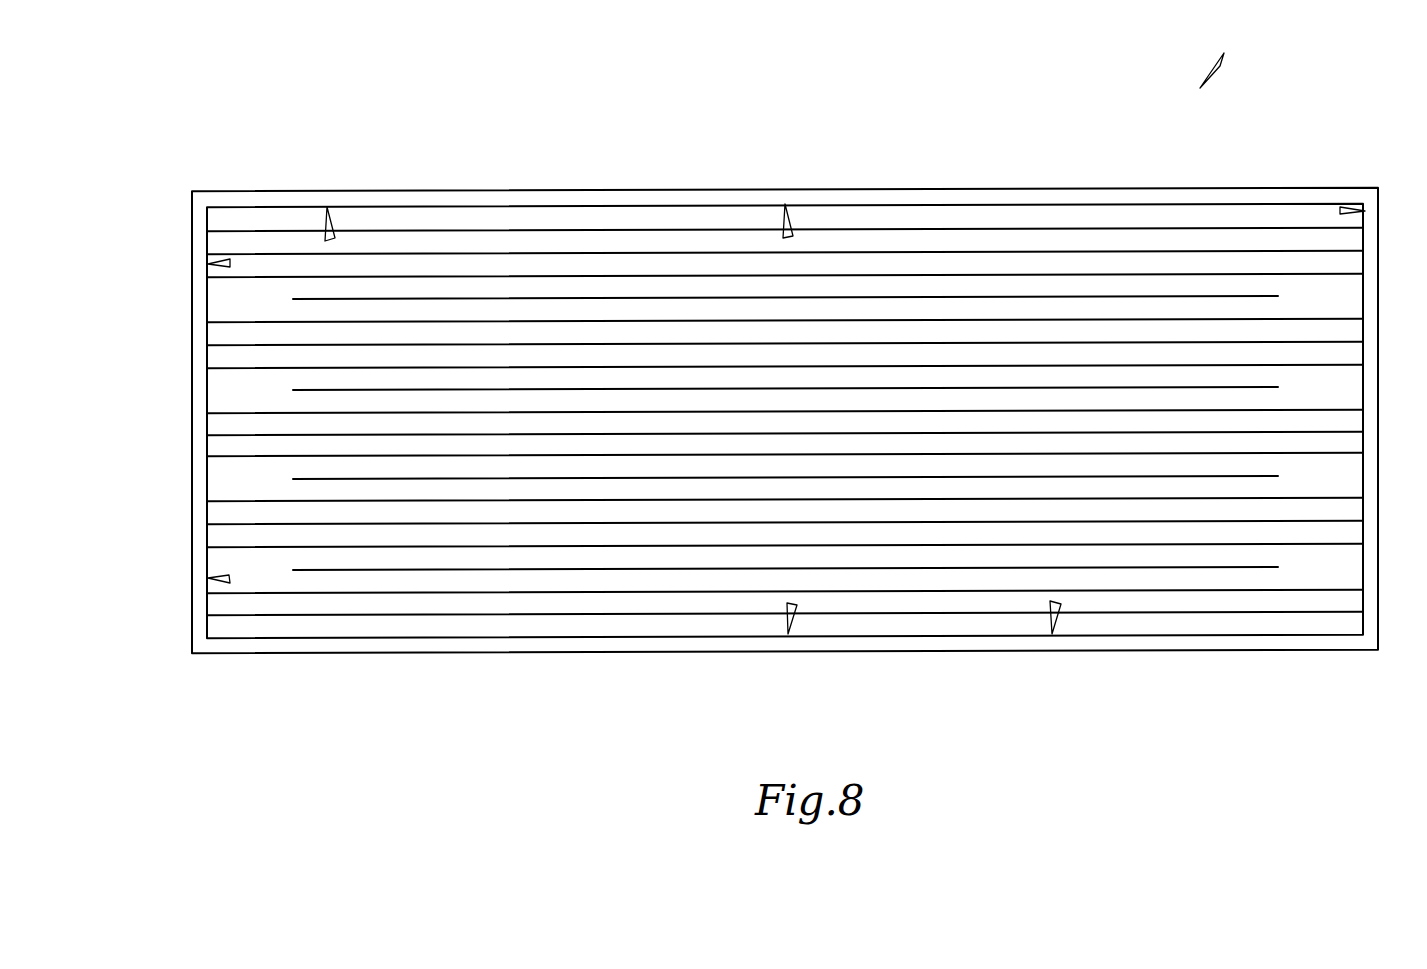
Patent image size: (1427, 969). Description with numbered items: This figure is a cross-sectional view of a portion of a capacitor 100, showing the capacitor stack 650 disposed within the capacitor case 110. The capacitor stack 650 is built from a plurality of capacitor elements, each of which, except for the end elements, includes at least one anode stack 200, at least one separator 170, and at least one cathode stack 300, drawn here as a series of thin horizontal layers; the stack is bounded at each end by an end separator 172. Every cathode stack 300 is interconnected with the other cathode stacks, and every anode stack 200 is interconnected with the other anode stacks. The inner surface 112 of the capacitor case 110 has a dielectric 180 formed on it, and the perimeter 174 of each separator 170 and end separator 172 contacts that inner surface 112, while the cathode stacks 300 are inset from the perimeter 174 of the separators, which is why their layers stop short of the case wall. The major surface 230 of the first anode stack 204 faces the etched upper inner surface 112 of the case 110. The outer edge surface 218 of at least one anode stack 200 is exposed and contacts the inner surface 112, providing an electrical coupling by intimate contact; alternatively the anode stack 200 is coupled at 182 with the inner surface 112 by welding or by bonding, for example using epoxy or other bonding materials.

The capacitor 100 is at (1221, 63).
The capacitor case 110 is at (192, 359).
The inner surface 112 is at (792, 238).
The separator 170 is at (207, 300).
The end separator 172 is at (1363, 228).
The perimeter 174 is at (207, 231).
The dielectric 180 is at (224, 263).
The coupling location 182 is at (207, 524).
The anode stack 200 is at (207, 277).
The first anode stack 204 is at (1363, 203).
The outer edge surface 218 is at (214, 262).
The major surface 230 is at (462, 253).
The cathode stack 300 is at (1265, 387).
The capacitor stack 650 is at (968, 228).